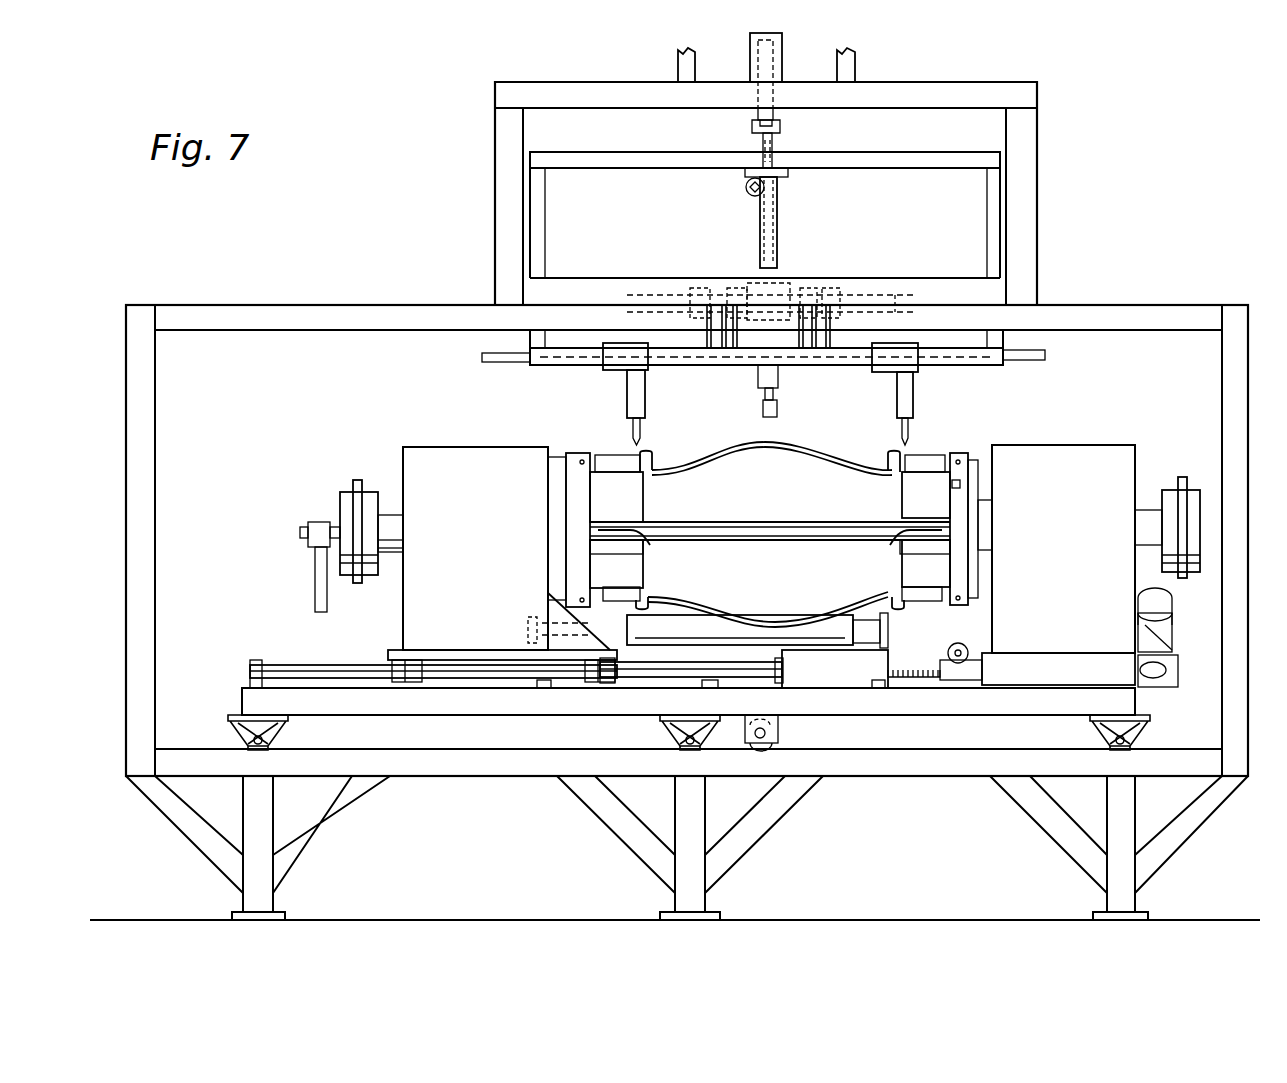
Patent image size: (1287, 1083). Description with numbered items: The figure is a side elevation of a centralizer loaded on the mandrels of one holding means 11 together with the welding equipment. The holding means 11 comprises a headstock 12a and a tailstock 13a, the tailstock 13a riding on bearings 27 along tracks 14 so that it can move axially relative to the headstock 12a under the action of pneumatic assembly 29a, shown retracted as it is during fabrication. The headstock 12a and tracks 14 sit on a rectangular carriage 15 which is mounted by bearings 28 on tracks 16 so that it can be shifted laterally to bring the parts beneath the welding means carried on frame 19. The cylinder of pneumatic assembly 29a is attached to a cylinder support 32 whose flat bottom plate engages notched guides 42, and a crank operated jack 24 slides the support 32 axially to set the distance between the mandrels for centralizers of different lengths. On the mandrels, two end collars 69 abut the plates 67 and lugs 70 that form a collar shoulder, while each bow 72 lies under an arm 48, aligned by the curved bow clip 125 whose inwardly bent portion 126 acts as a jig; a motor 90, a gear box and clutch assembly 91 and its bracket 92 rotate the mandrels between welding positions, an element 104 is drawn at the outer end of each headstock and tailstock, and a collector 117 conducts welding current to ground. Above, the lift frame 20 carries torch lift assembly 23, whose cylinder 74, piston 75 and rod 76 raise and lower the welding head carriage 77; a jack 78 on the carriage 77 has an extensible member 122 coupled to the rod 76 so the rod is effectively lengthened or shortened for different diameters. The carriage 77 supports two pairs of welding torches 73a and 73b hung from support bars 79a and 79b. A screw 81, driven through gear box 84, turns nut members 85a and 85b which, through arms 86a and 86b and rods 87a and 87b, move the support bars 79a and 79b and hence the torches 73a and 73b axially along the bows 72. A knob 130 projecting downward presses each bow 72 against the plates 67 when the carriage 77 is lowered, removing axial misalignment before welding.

The holding means 11 is at (1090, 252).
The headstock 12a is at (1068, 445).
The tailstock 13a is at (473, 436).
The tracks 14 is at (325, 665).
The carriage 15 is at (244, 690).
The tracks 16 is at (262, 752).
The frame 19 is at (1248, 360).
The lift frame 20 is at (1038, 184).
The torch lift assembly 23 is at (788, 38).
The jack 24 is at (945, 658).
The bearings 27 is at (400, 682).
The bearings 28 is at (240, 730).
The pneumatic assembly 29a is at (684, 628).
The cylinder support 32 is at (830, 679).
The notched guides 42 is at (542, 688).
The arm 48 is at (625, 578).
The plates 67 is at (960, 455).
The end collar 69 is at (630, 500).
The lug 70 is at (962, 486).
The bow 72 is at (793, 442).
The welding torches 73a is at (633, 428).
The welding torches 73b is at (914, 400).
The cylinder 74 is at (783, 62).
The piston 75 is at (752, 44).
The rod 76 is at (781, 112).
The welding head carriage 77 is at (583, 152).
The jack 78 is at (778, 212).
The support bar 79a is at (614, 372).
The support bar 79b is at (876, 375).
The screw 81 is at (900, 292).
The gear box 84 is at (746, 286).
The nut member 85a is at (690, 290).
The nut member 85b is at (836, 288).
The arm 86a is at (700, 340).
The arm 86b is at (840, 340).
The rod 87a is at (482, 358).
The rod 87b is at (1045, 355).
The motor 90 is at (1174, 602).
The gear box and clutch assembly 91 is at (1178, 668).
The bracket 92 is at (1174, 634).
The handwheel hub 104 is at (345, 487).
The collector 117 is at (312, 546).
The extensible member 122 is at (762, 144).
The bow clip 125 is at (603, 455).
The inwardly bent portion 126 is at (655, 462).
The knob 130 is at (760, 405).